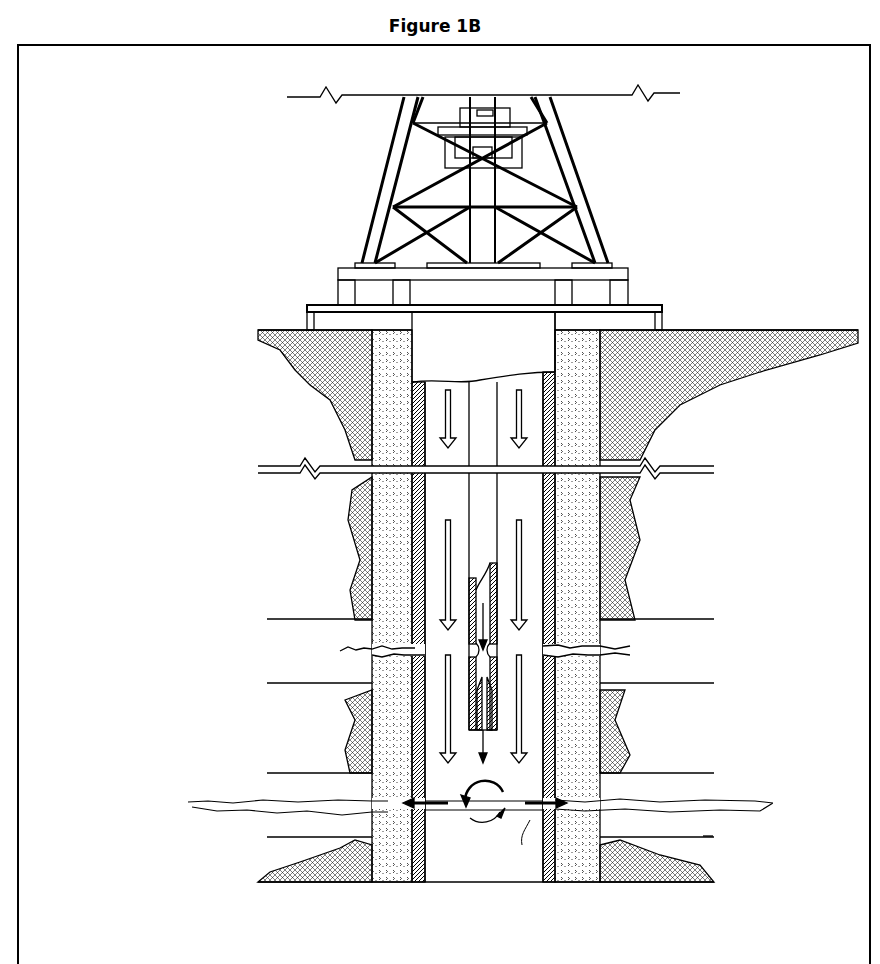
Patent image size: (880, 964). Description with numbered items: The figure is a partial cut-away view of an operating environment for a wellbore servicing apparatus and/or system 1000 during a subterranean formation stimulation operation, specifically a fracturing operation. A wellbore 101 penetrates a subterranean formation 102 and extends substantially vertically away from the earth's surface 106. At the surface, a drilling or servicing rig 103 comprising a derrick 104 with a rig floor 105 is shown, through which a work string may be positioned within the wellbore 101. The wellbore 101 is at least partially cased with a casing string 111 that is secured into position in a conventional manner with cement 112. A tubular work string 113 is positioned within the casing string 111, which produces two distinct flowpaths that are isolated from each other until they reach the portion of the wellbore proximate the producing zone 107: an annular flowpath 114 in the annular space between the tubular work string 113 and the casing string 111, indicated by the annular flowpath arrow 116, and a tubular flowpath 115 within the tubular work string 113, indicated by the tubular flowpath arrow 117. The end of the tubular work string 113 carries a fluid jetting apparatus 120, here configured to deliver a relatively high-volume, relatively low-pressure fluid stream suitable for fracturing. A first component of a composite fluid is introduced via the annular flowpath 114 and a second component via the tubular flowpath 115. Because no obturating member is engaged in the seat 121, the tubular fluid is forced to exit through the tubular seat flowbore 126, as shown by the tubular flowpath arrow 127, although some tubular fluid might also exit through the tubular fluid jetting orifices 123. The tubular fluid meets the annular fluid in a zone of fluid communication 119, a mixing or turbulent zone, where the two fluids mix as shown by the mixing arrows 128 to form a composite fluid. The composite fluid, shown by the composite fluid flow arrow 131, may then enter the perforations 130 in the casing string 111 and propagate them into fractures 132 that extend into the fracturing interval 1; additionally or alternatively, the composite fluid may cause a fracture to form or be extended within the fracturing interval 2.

The wellbore servicing apparatus and/or system 1000 is at (209, 132).
The wellbore 101 is at (375, 545).
The subterranean formation 102 is at (766, 406).
The drilling or servicing rig 103 is at (528, 180).
The derrick 104 is at (387, 160).
The rig floor 105 is at (645, 305).
The earth's surface 106 is at (802, 330).
The producing zone 107 is at (175, 745).
The casing string 111 is at (420, 403).
The cement 112 is at (380, 367).
The tubular work string 113 is at (555, 458).
The annular flowpath 114 is at (443, 458).
The tubular flowpath 115 is at (483, 588).
The annular flowpath arrow 116 is at (447, 530).
The tubular flowpath arrow 117 is at (484, 617).
The zone of fluid communication 119 is at (492, 835).
The fluid jetting apparatus 120 is at (486, 686).
The seat 121 is at (472, 722).
The tubular fluid jetting orifices 123 is at (493, 650).
The tubular seat flowbore 126 is at (477, 693).
The tubular flowpath arrow 127 is at (485, 745).
The mixing arrows 128 is at (485, 815).
The perforations 130 is at (340, 650).
The composite fluid flow arrow 131 is at (533, 813).
The fractures 132 is at (215, 807).
The fracturing interval 1 is at (657, 829).
The fracturing interval 2 is at (657, 640).